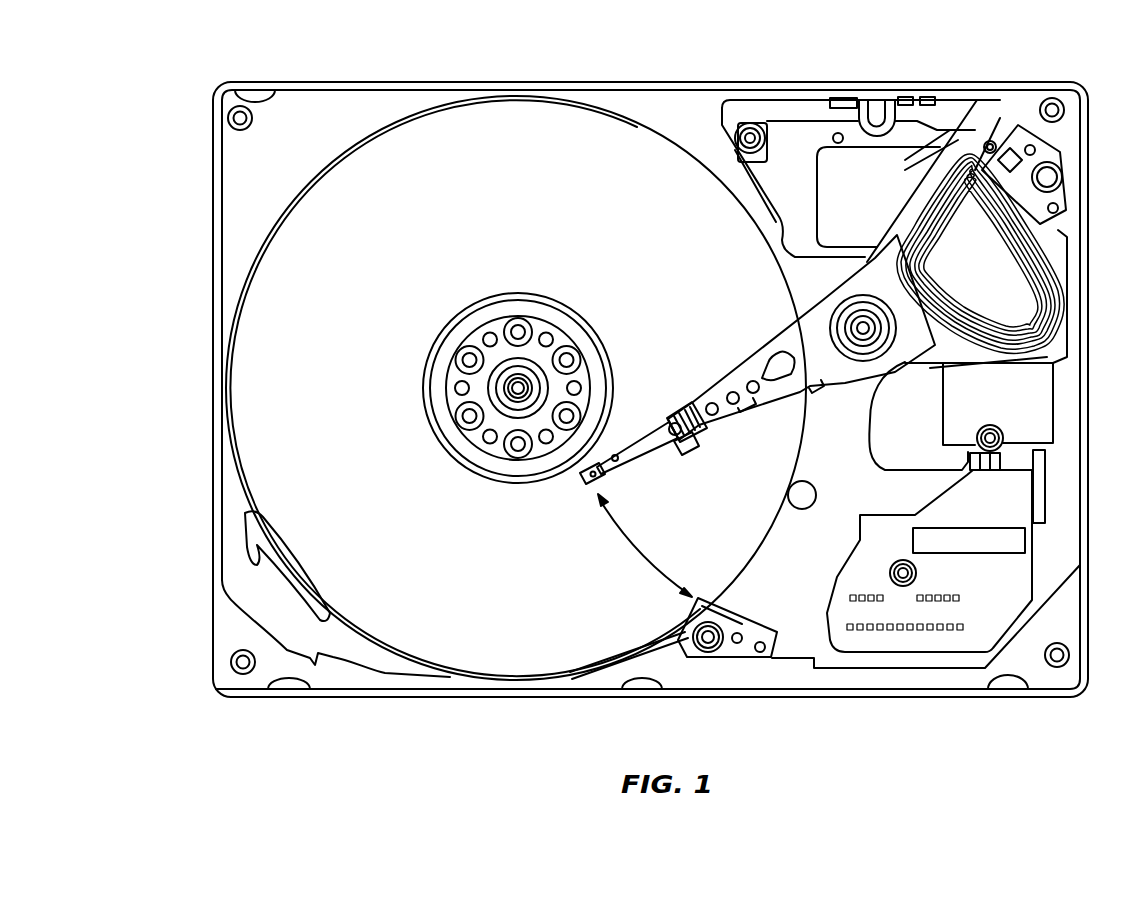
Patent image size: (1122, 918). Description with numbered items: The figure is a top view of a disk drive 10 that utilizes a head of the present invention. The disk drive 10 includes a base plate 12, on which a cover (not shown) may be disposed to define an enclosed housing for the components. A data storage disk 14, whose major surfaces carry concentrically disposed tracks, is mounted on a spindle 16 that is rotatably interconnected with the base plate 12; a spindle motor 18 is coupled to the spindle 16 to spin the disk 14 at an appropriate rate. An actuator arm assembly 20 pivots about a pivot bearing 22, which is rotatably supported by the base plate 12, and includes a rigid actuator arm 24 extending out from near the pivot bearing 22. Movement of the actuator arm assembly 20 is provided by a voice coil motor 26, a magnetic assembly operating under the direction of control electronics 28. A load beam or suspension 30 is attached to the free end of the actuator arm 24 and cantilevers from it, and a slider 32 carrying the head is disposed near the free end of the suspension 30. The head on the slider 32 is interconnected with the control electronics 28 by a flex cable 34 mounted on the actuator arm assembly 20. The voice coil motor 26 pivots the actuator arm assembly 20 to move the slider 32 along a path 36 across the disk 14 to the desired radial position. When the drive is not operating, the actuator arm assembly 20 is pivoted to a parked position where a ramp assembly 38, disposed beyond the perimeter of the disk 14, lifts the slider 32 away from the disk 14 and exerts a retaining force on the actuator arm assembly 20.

The disk drive 10 is at (150, 171).
The base plate 12 is at (403, 78).
The data storage disk 14 is at (528, 124).
The spindle 16 is at (546, 293).
The spindle motor 18 is at (497, 362).
The actuator arm assembly 20 is at (866, 319).
The pivot bearing 22 is at (858, 352).
The actuator arm 24 is at (727, 425).
The voice coil motor 26 is at (980, 254).
The control electronics 28 is at (908, 637).
The suspension 30 is at (626, 442).
The slider 32 is at (592, 478).
The flex cable 34 is at (874, 462).
The path 36 is at (631, 560).
The ramp assembly 38 is at (735, 657).